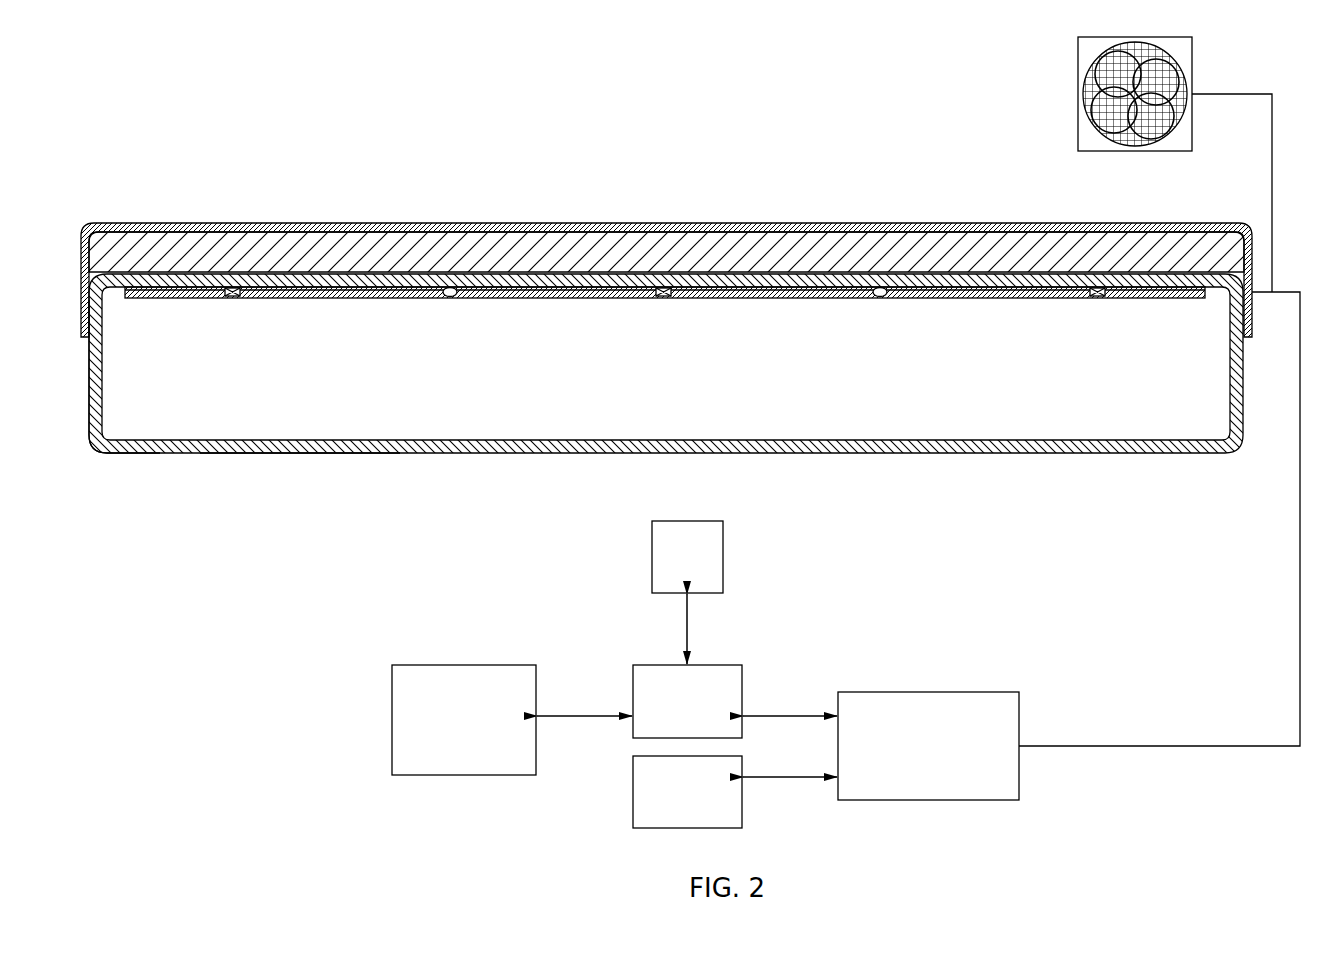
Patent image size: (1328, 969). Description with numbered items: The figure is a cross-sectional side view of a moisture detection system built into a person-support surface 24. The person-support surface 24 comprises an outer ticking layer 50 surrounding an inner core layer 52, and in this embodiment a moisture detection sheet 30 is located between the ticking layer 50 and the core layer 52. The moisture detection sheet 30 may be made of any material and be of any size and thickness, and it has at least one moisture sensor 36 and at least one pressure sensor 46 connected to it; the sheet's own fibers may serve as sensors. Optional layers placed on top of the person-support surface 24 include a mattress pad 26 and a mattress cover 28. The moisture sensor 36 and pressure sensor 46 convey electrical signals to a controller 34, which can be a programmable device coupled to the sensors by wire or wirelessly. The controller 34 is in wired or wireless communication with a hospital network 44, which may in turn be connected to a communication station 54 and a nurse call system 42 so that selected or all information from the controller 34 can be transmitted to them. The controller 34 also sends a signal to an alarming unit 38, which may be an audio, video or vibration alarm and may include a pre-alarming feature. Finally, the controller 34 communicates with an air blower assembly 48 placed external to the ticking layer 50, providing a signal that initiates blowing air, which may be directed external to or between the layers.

The person-support surface 24 is at (426, 463).
The mattress pad 26 is at (1027, 247).
The mattress cover 28 is at (1224, 216).
The moisture detection sheet 30 is at (185, 293).
The controller 34 is at (914, 757).
The moisture sensor 36 is at (235, 298).
The alarming unit 38 is at (673, 803).
The nurse call system 42 is at (673, 568).
The hospital network 44 is at (673, 713).
The pressure sensor 46 is at (448, 297).
The air blower assembly 48 is at (1044, 98).
The ticking layer 50 is at (170, 448).
The core layer 52 is at (310, 430).
The communication station 54 is at (450, 727).